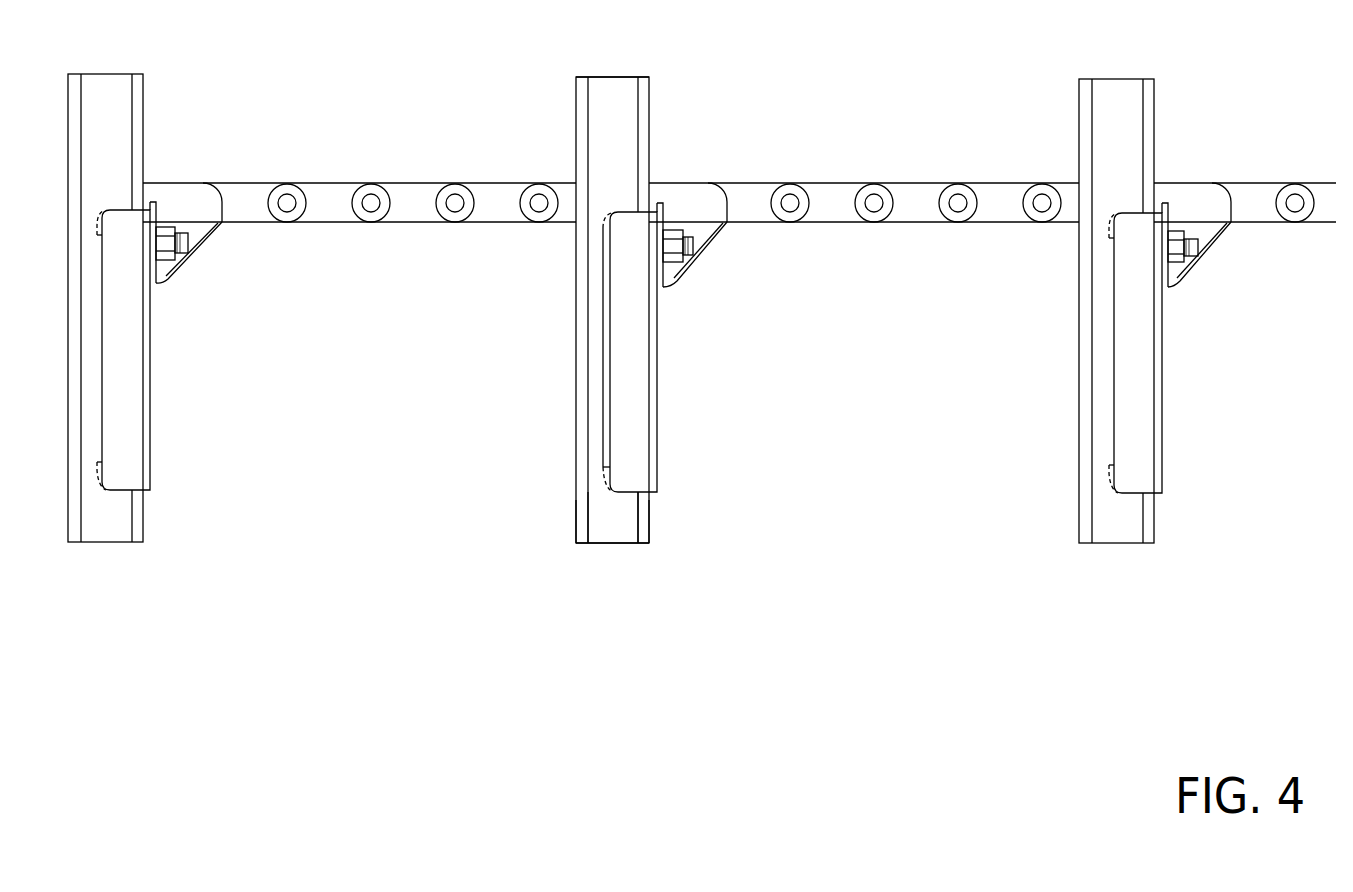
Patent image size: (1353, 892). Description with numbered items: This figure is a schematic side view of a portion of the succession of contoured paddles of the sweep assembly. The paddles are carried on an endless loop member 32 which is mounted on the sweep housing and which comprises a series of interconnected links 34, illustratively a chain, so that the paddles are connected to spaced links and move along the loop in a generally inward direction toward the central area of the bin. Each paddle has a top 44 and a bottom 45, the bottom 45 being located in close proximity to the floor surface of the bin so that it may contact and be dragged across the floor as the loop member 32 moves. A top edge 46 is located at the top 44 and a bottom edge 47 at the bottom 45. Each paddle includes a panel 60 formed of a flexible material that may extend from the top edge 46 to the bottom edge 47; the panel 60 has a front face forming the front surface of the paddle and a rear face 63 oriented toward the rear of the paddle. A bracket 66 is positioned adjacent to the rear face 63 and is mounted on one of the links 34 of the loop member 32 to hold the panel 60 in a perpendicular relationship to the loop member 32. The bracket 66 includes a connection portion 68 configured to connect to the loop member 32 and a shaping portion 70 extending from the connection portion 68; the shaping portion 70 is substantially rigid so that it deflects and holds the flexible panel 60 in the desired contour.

The endless loop member 32 is at (849, 237).
The interconnected links 34 is at (826, 194).
The top 44 is at (668, 81).
The bottom 45 is at (618, 580).
The top edge 46 is at (610, 77).
The bottom edge 47 is at (590, 543).
The panel 60 is at (667, 347).
The rear face 63 is at (608, 522).
The bracket 66 is at (688, 296).
The connection portion 68 is at (676, 352).
The shaping portion 70 is at (630, 433).